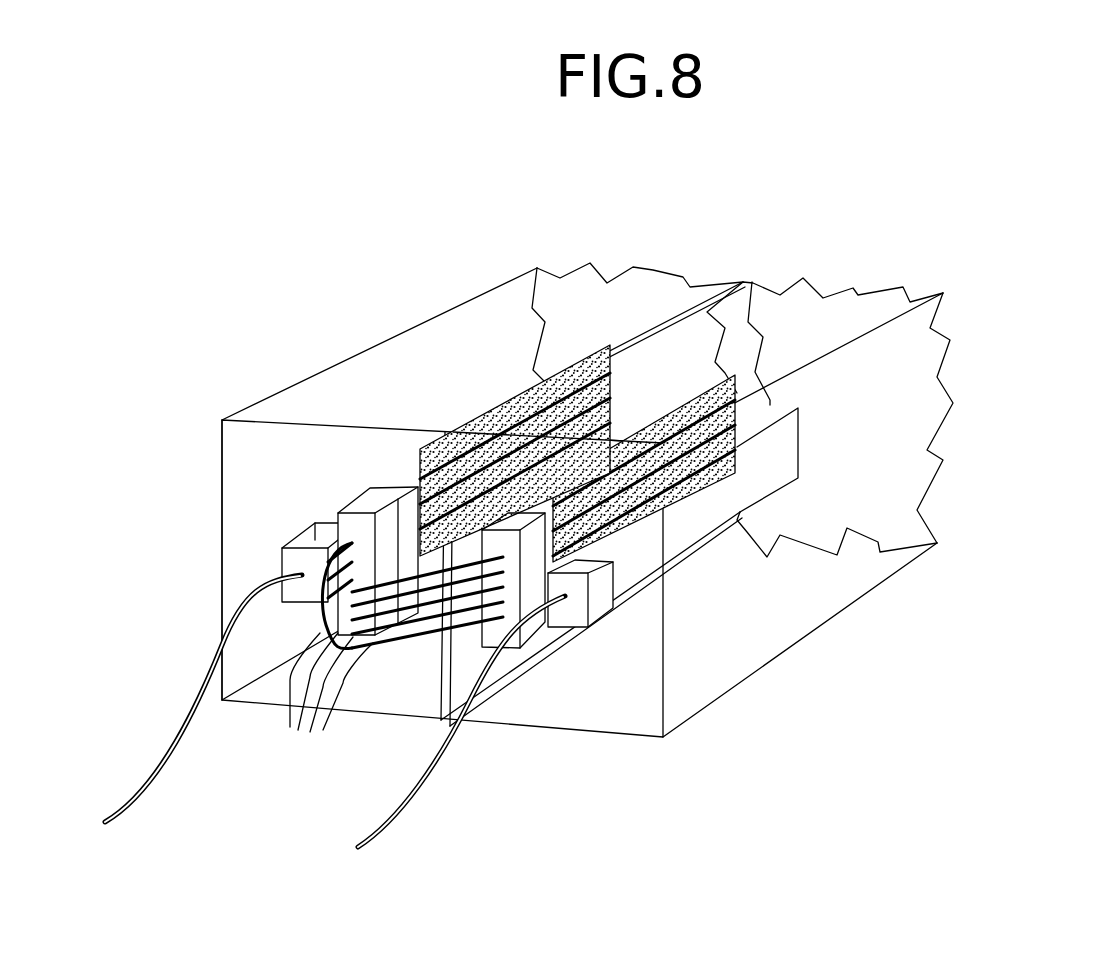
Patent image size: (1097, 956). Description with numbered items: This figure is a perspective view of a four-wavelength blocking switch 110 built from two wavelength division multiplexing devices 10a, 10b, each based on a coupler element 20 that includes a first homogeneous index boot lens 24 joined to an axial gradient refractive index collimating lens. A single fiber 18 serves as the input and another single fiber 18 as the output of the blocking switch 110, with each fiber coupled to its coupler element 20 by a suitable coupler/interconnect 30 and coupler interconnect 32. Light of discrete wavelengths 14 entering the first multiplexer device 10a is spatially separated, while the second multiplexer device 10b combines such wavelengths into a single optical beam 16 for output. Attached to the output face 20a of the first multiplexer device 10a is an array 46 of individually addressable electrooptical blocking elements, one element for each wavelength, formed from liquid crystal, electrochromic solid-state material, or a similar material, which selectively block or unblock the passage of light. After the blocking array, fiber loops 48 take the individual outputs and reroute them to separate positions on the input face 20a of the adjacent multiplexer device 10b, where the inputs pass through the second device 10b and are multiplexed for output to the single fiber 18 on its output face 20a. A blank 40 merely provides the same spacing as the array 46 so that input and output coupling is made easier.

The first multiplexer device 10a is at (362, 214).
The second multiplexer device 10b is at (1005, 343).
The blocking switch 110 is at (822, 250).
The optical beams of discrete wavelengths 14 is at (617, 420).
The single optical beam 16 is at (517, 423).
The single optical fiber 18 is at (162, 787).
The coupler element 20 is at (276, 332).
The face of the coupler element 20a is at (240, 523).
The first homogeneous index boot lens 24 is at (423, 377).
The coupler/interconnect 30 is at (350, 510).
The coupler interconnect 32 is at (283, 540).
The blank 40 is at (312, 500).
The array of electrooptical blocking elements 46 is at (395, 497).
The fiber loops 48 is at (387, 654).